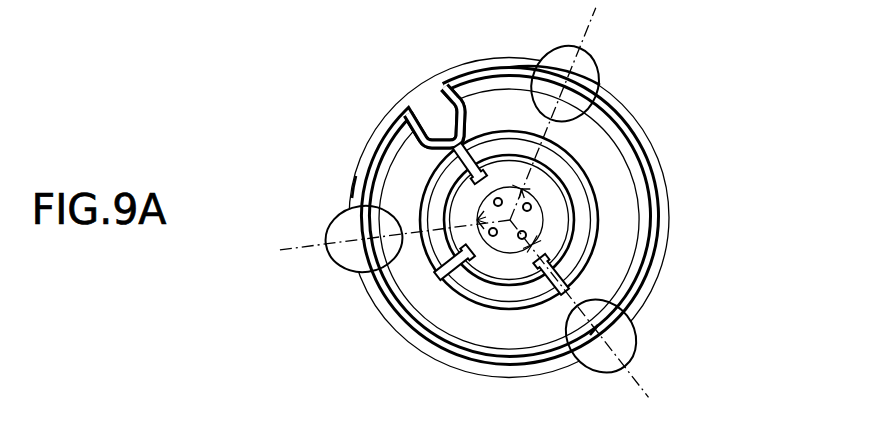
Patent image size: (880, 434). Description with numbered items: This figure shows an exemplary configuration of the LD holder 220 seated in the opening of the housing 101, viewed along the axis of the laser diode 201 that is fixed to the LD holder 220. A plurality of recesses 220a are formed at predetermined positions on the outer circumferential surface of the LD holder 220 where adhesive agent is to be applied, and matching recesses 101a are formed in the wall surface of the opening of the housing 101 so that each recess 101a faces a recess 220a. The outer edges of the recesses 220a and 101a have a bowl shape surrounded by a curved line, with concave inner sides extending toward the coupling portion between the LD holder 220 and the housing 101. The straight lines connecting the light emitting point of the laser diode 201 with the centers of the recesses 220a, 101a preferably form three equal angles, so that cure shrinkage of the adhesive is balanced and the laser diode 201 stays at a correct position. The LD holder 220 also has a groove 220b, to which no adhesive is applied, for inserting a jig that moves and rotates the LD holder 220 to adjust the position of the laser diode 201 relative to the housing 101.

The housing 101 is at (671, 214).
The recess 101a is at (600, 53).
The laser diode 201 is at (517, 263).
The LD holder 220 is at (612, 175).
The recess 220a is at (527, 96).
The groove 220b is at (438, 122).